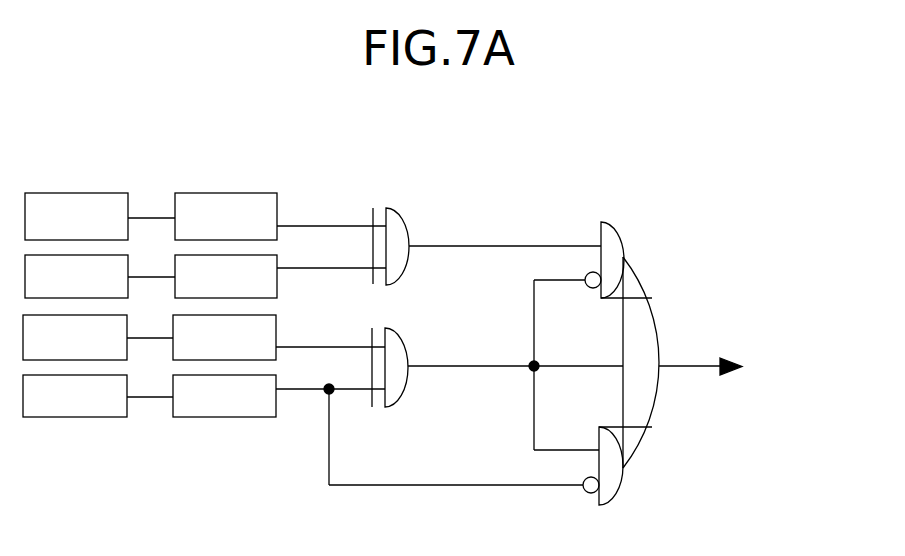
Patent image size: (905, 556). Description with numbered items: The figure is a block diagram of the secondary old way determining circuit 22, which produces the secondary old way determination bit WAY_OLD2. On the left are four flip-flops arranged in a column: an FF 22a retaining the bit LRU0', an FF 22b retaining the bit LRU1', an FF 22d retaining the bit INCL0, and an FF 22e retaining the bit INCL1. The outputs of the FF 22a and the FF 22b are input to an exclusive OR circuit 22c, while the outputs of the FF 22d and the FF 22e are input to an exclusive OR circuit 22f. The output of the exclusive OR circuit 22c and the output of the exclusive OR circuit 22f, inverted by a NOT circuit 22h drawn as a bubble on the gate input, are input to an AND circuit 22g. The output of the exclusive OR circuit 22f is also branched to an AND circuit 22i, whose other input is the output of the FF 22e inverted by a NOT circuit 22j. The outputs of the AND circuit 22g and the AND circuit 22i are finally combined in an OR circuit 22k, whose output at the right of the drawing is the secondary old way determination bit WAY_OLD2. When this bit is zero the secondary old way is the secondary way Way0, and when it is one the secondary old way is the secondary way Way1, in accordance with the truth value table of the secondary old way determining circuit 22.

The secondary old way determining circuit 22 is at (740, 197).
The FF 22a is at (265, 203).
The FF 22b is at (277, 277).
The exclusive OR circuit 22c is at (393, 217).
The FF 22d is at (276, 330).
The FF 22e is at (262, 417).
The exclusive OR circuit 22f is at (390, 335).
The AND circuit 22g is at (607, 225).
The NOT circuit 22h is at (592, 288).
The AND circuit 22i is at (605, 500).
The NOT circuit 22j is at (588, 493).
The OR circuit 22k is at (655, 318).